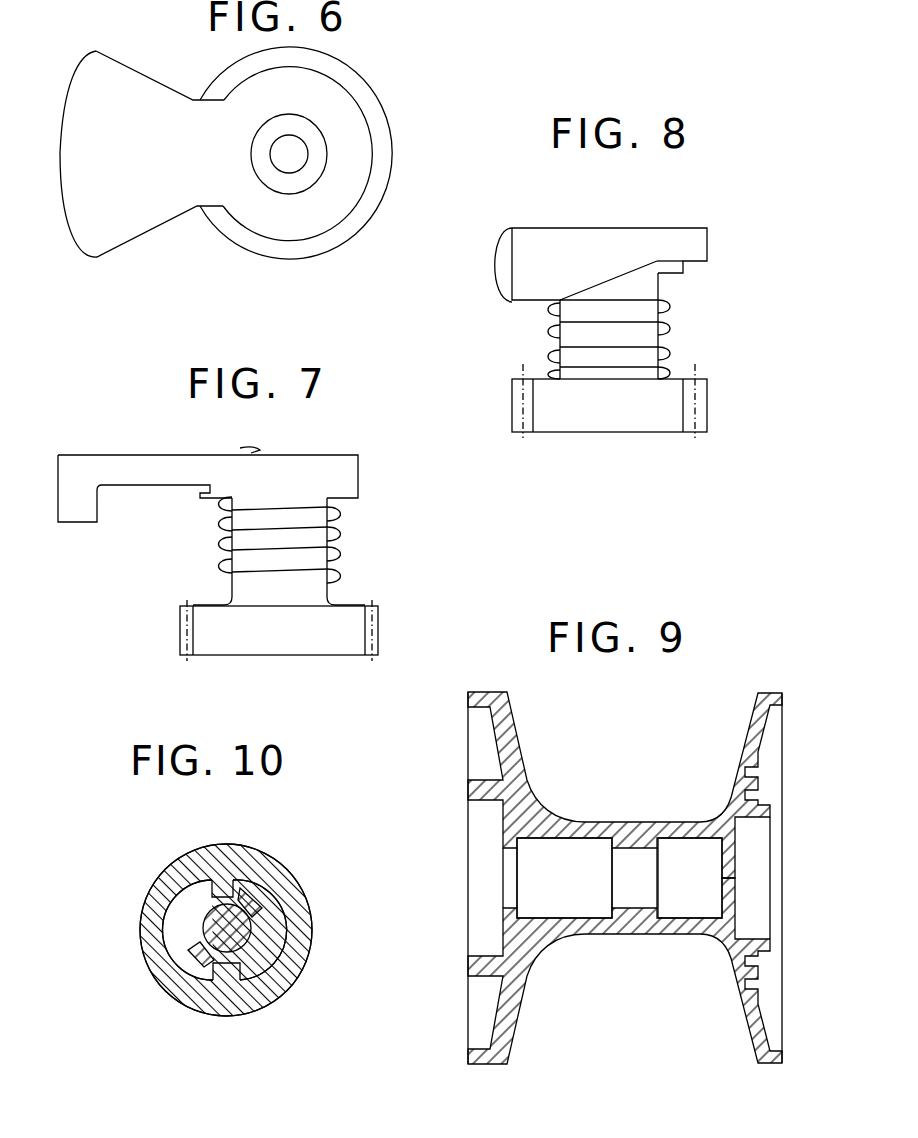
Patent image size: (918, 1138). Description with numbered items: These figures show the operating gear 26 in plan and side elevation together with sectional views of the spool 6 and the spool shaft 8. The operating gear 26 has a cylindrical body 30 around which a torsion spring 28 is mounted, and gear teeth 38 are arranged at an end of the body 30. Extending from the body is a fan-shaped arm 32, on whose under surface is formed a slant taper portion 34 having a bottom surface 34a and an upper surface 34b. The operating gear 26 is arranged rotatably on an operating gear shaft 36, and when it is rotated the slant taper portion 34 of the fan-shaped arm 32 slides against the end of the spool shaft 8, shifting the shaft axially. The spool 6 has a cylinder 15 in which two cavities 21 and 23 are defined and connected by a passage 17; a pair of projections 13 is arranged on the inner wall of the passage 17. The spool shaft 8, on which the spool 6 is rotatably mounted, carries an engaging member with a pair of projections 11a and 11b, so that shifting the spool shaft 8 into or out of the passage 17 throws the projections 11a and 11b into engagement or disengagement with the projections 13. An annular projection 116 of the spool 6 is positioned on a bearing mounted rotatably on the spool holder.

In FIG. 9, the spool 6 is at (528, 737).
In FIG. 10, the spool 6 is at (288, 863).
In FIG. 10, the spool shaft 8 is at (203, 917).
In FIG. 10, the projection 11a is at (253, 917).
In FIG. 10, the projection 11b is at (180, 937).
In FIG. 9, the projections 13 is at (640, 830).
In FIG. 10, the projections 13 is at (222, 887).
In FIG. 9, the cylinder 15 is at (602, 820).
In FIG. 9, the passage 17 is at (648, 853).
In FIG. 9, the cavity 21 is at (692, 910).
In FIG. 9, the cavity 23 is at (563, 913).
In FIG. 6, the operating gear 26 is at (381, 88).
In FIG. 7, the operating gear 26 is at (368, 453).
In FIG. 8, the operating gear 26 is at (691, 280).
In FIG. 7, the torsion spring 28 is at (333, 553).
In FIG. 8, the torsion spring 28 is at (667, 353).
In FIG. 7, the cylindrical body 30 is at (243, 558).
In FIG. 8, the cylindrical body 30 is at (567, 333).
In FIG. 6, the fan-shaped arm 32 is at (168, 206).
In FIG. 7, the fan-shaped arm 32 is at (142, 463).
In FIG. 8, the fan-shaped arm 32 is at (548, 228).
In FIG. 8, the slant taper portion 34 is at (622, 276).
In FIG. 8, the bottom surface 34a is at (580, 292).
In FIG. 8, the upper surface 34b is at (679, 263).
In FIG. 6, the operating gear shaft 36 is at (295, 153).
In FIG. 7, the gear teeth 38 is at (380, 630).
In FIG. 8, the gear teeth 38 is at (707, 402).
In FIG. 9, the annular projection 116 is at (480, 803).